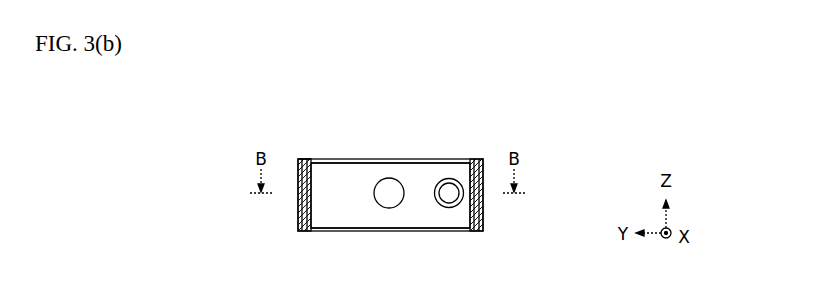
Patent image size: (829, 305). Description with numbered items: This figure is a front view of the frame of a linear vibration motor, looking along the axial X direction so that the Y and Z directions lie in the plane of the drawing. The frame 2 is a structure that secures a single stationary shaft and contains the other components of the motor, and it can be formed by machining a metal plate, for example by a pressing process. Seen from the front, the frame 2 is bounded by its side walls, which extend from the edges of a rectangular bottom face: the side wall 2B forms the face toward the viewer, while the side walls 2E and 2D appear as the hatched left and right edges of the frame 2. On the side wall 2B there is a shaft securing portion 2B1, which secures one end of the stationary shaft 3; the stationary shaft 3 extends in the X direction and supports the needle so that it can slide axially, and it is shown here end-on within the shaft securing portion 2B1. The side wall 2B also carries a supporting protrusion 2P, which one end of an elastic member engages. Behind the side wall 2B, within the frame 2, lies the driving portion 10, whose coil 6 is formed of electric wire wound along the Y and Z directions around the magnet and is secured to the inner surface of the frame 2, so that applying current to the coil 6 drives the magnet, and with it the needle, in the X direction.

The frame 2 is at (368, 231).
The side wall 2B is at (362, 173).
The shaft securing portion 2B1 is at (453, 179).
The side wall 2D is at (483, 167).
The side wall 2E is at (298, 165).
The supporting protrusion 2P is at (390, 178).
The stationary shaft 3 is at (443, 181).
The coil 6 is at (298, 119).
The driving portion 10 is at (310, 162).